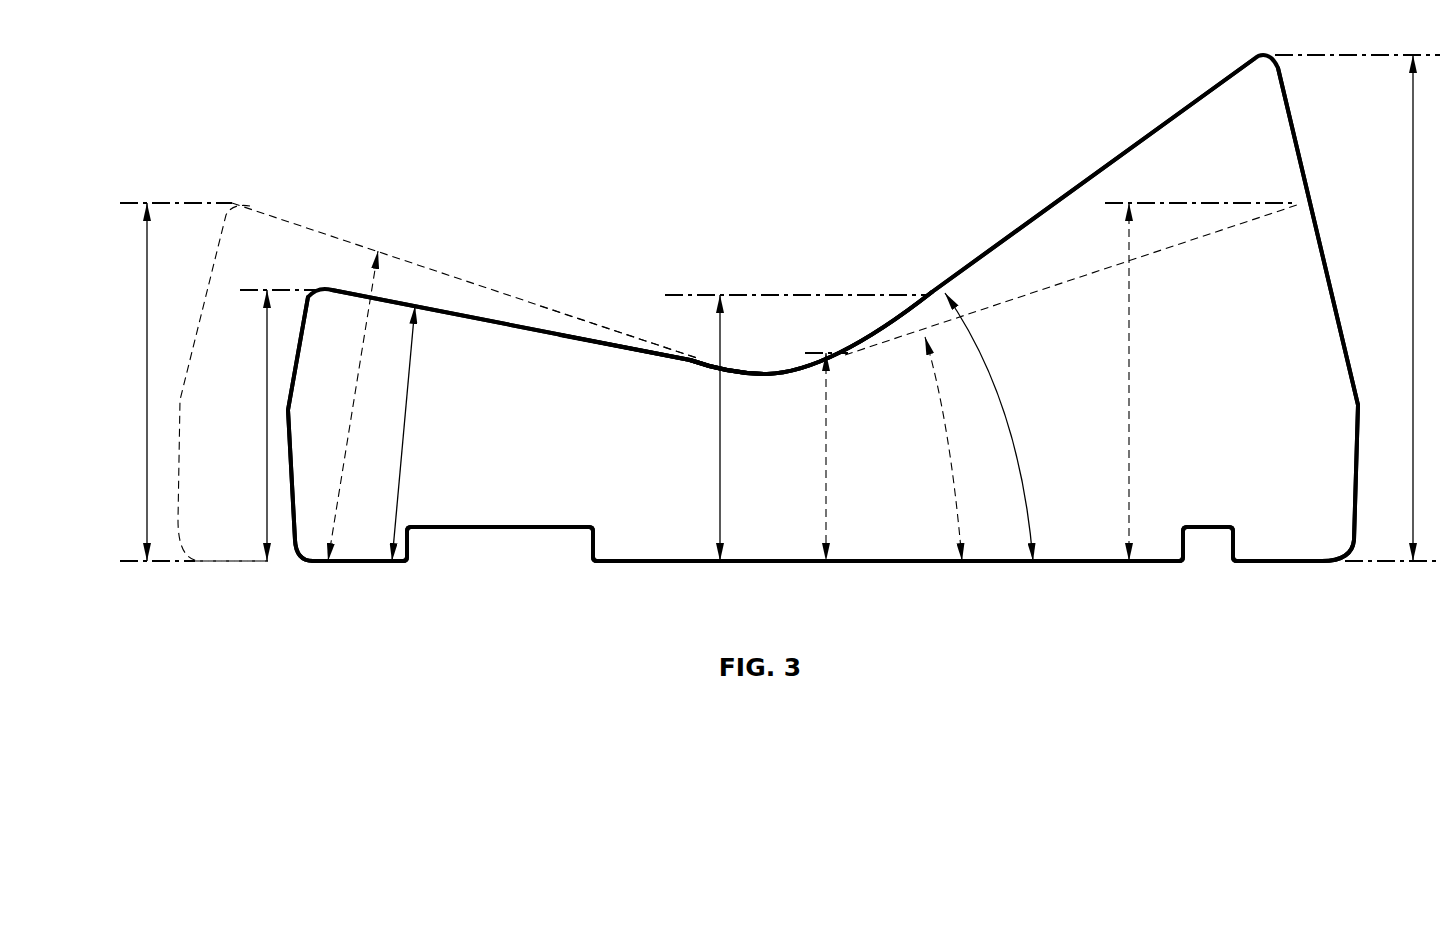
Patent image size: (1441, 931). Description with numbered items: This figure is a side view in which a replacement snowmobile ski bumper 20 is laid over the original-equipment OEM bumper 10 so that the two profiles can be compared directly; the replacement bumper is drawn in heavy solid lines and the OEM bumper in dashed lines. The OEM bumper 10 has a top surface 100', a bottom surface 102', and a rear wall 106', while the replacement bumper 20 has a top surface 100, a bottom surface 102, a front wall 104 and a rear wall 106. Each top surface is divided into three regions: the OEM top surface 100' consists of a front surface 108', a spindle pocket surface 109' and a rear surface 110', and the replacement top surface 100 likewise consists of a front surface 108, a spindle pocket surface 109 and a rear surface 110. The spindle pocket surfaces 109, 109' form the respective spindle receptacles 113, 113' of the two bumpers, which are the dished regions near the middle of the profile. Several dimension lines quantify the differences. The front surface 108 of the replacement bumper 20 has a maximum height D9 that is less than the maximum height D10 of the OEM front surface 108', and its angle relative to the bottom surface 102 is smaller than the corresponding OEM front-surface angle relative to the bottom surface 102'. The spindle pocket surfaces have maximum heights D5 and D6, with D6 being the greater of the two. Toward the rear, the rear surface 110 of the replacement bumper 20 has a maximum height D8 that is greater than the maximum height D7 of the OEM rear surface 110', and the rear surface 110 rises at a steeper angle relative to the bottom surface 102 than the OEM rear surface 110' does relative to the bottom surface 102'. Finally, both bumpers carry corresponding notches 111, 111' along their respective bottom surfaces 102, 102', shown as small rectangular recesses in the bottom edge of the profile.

The OEM bumper 10 is at (287, 217).
The replacement bumper 20 is at (1300, 143).
The top surface 100 is at (511, 297).
The top surface 100' is at (464, 271).
The bottom surface 102 is at (817, 596).
The bottom surface 102' is at (232, 601).
The front wall 104 is at (160, 567).
The rear wall 106 is at (1329, 236).
The rear wall 106' is at (1364, 435).
The front surface 108 is at (625, 308).
The front surface 108' is at (612, 293).
The spindle pocket surface 109 is at (811, 277).
The spindle pocket surface 109' is at (729, 279).
The rear surface 110 is at (1093, 166).
The rear surface 110' is at (1071, 250).
The notch 111 is at (820, 571).
The notch 111' is at (832, 587).
The spindle receptacle 113 is at (849, 285).
The spindle receptacle 113' is at (718, 299).
The maximum height of spindle pocket surface D5 is at (826, 447).
The maximum height of spindle pocket surface D6 is at (720, 418).
The maximum height of rear surface D7 is at (1129, 435).
The maximum height of rear surface D8 is at (1410, 290).
The maximum height of front surface D9 is at (267, 473).
The maximum height of front surface D10 is at (145, 337).